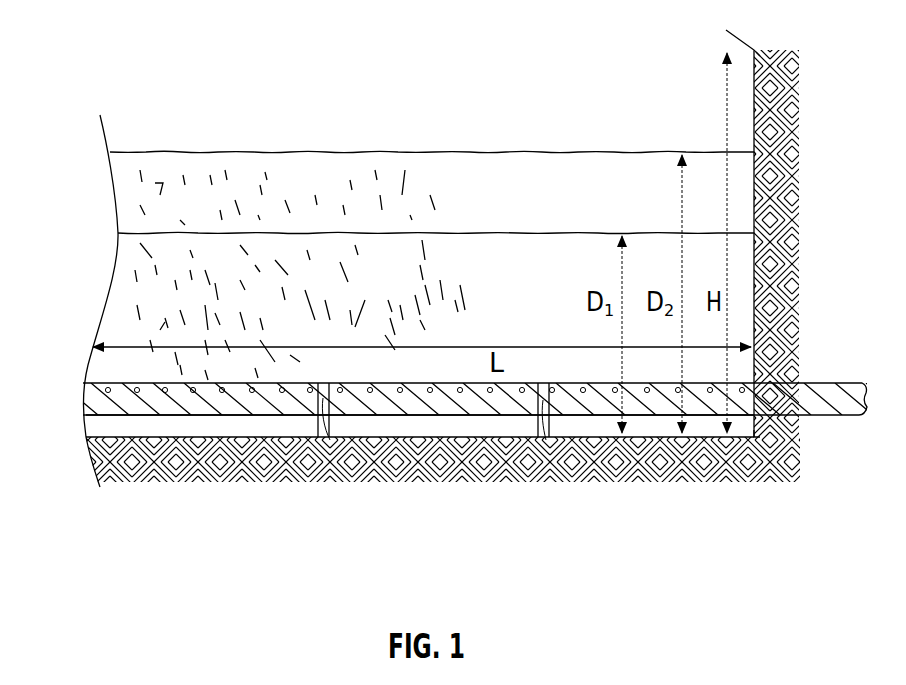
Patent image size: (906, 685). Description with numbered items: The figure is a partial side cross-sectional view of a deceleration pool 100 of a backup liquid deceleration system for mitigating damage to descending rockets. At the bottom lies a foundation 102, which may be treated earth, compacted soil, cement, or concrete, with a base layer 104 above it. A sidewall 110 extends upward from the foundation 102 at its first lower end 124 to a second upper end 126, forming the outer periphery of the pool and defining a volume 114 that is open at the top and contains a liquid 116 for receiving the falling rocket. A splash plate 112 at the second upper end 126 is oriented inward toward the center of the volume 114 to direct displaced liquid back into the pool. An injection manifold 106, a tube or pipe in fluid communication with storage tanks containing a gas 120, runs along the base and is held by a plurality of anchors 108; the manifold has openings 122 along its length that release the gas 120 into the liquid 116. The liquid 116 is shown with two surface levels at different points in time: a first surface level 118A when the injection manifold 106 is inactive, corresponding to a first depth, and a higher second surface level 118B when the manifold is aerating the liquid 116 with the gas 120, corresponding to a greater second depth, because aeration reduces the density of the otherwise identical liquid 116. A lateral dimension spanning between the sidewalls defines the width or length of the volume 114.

The deceleration pool 100 is at (172, 59).
The foundation 102 is at (113, 456).
The base layer 104 is at (97, 424).
The injection manifold 106 is at (826, 392).
The anchors 108 is at (543, 407).
The sidewall 110 is at (780, 262).
The splash plate 112 is at (740, 38).
The volume 114 is at (406, 112).
The liquid 116 is at (405, 283).
The first surface level 118A is at (114, 231).
The second surface level 118B is at (107, 150).
The gas 120 is at (175, 323).
The openings 122 is at (222, 393).
The first lower end 124 is at (755, 431).
The second upper end 126 is at (770, 62).